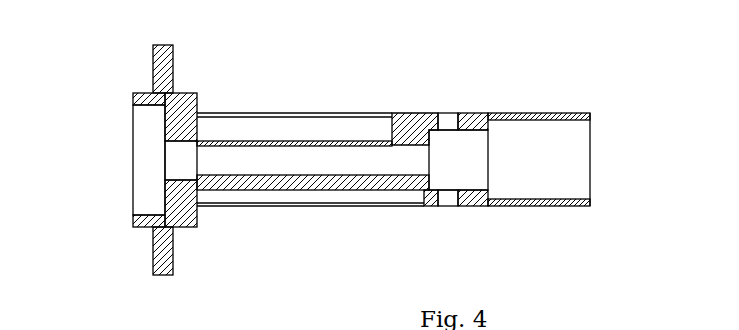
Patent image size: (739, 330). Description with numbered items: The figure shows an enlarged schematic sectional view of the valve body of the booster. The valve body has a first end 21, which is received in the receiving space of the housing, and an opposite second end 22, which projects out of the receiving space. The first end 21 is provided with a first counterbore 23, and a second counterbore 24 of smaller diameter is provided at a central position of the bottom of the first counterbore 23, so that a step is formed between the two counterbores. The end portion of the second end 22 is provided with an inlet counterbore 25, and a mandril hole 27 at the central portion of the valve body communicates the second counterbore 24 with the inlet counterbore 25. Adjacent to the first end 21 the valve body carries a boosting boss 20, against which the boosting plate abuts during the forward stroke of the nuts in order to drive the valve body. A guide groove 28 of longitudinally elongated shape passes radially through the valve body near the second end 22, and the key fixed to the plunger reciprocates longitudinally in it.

The boosting boss 20 is at (173, 69).
The first end 21 is at (133, 224).
The second end 22 is at (568, 207).
The first counterbore 23 is at (138, 128).
The second counterbore 24 is at (172, 172).
The inlet counterbore 25 is at (495, 157).
The mandril hole 27 is at (282, 165).
The guide groove 28 is at (447, 125).